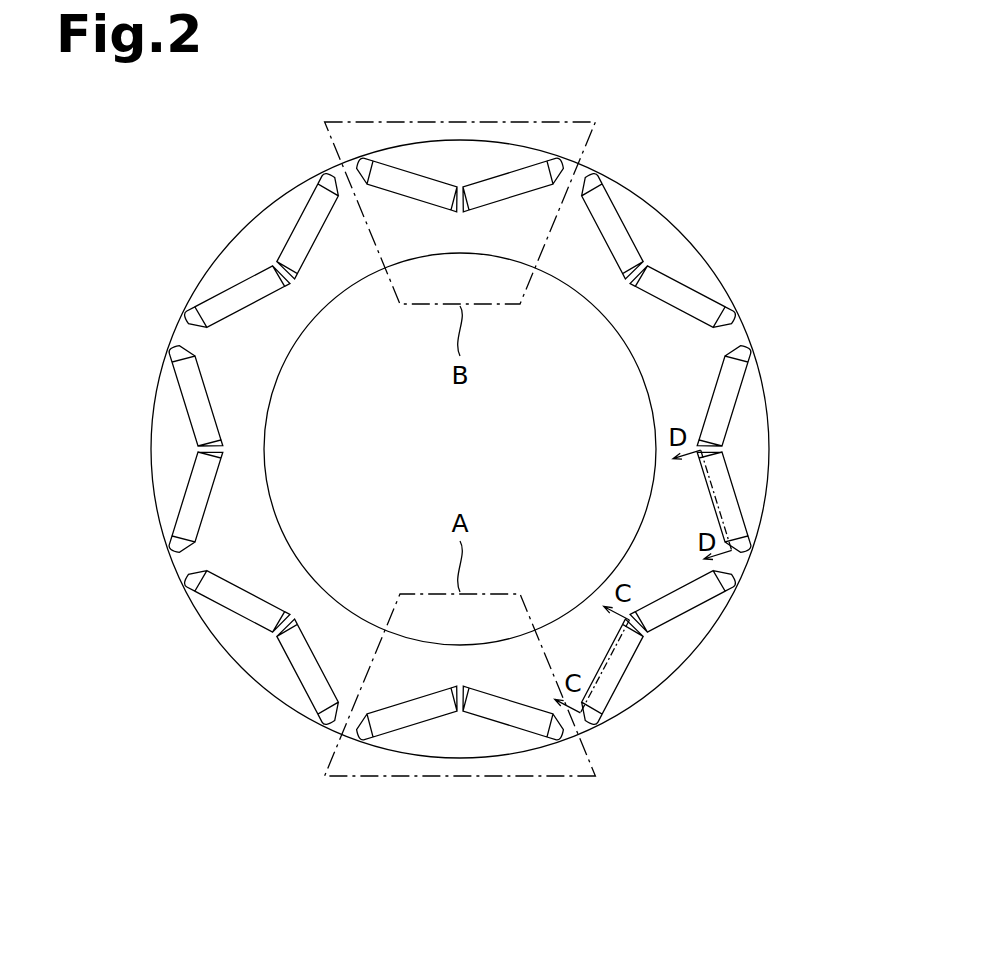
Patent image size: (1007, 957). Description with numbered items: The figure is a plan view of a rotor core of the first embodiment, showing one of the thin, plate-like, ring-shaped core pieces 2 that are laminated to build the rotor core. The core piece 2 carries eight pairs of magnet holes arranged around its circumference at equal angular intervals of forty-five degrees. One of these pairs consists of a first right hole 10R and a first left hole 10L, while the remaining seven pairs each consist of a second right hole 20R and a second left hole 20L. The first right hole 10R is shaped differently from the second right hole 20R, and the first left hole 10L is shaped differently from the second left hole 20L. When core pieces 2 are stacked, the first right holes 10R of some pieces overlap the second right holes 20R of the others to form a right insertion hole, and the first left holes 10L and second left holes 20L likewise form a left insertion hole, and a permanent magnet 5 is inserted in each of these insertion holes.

The core piece 2 is at (676, 244).
The permanent magnet 5 is at (460, 449).
The first left hole 10L is at (513, 768).
The first right hole 10R is at (407, 768).
The second left hole 20L is at (460, 415).
The second right hole 20R is at (461, 420).